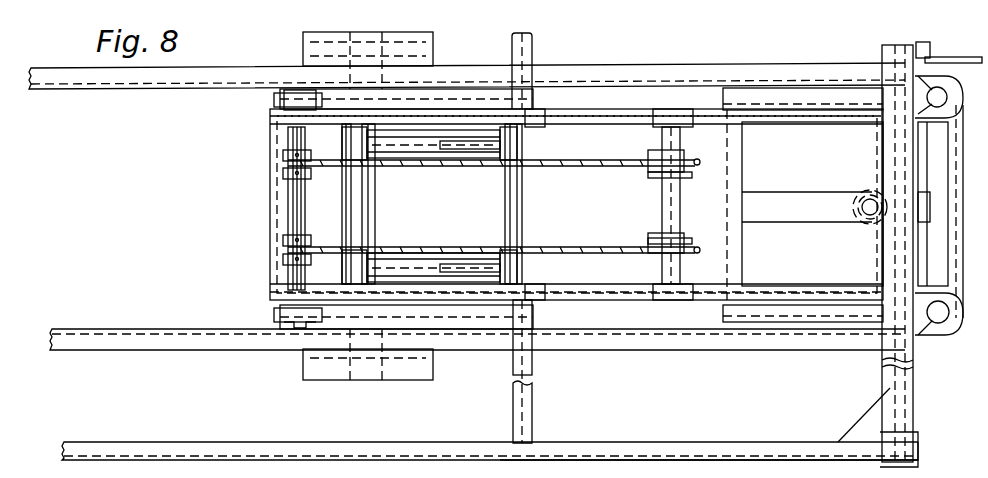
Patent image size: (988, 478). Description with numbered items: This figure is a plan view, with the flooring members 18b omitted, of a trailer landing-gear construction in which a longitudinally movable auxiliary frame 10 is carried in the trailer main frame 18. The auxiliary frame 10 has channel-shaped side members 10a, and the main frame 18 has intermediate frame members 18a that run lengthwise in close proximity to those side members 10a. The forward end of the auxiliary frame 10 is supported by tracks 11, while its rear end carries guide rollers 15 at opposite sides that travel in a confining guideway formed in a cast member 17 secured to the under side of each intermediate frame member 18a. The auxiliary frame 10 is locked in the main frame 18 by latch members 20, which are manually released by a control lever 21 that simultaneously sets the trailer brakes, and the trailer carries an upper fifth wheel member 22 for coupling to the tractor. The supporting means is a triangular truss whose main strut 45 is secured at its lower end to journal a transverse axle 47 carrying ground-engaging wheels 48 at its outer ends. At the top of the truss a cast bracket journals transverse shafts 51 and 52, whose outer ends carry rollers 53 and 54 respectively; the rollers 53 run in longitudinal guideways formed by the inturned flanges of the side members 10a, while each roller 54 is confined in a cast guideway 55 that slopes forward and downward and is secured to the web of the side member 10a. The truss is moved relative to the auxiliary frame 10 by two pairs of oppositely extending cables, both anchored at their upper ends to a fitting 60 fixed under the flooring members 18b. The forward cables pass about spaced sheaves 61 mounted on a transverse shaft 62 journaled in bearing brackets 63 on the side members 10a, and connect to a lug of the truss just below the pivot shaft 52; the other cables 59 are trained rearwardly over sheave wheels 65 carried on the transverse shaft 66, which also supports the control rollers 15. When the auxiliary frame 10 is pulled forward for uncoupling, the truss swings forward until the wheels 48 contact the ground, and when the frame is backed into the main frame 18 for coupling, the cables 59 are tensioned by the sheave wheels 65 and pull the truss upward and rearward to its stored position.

The auxiliary frame 10 is at (602, 280).
The side members 10a is at (630, 118).
The tracks 11 is at (780, 96).
The guide rollers 15 is at (274, 100).
The cast member 17 is at (440, 98).
The trailer main frame 18 is at (572, 448).
The intermediate frame members 18a is at (575, 76).
The flooring members 18b is at (540, 461).
The latch members 20 is at (942, 74).
The control lever 21 is at (943, 56).
The fifth wheel member 22 is at (825, 257).
The main strut 45 is at (458, 150).
The transverse axle 47 is at (376, 210).
The ground-engaging wheels 48 is at (405, 42).
The transverse shaft 51 is at (521, 197).
The transverse shaft 52 is at (352, 186).
The rollers 53 is at (538, 132).
The rollers 54 is at (258, 276).
The cast guideway 55 is at (474, 262).
The cables 59 is at (604, 166).
The fitting 60 is at (694, 160).
The sheaves 61 is at (656, 176).
The transverse shaft 62 is at (680, 206).
The bearing brackets 63 is at (656, 286).
The sheave wheels 65 is at (291, 178).
The transverse shaft 66 is at (296, 224).